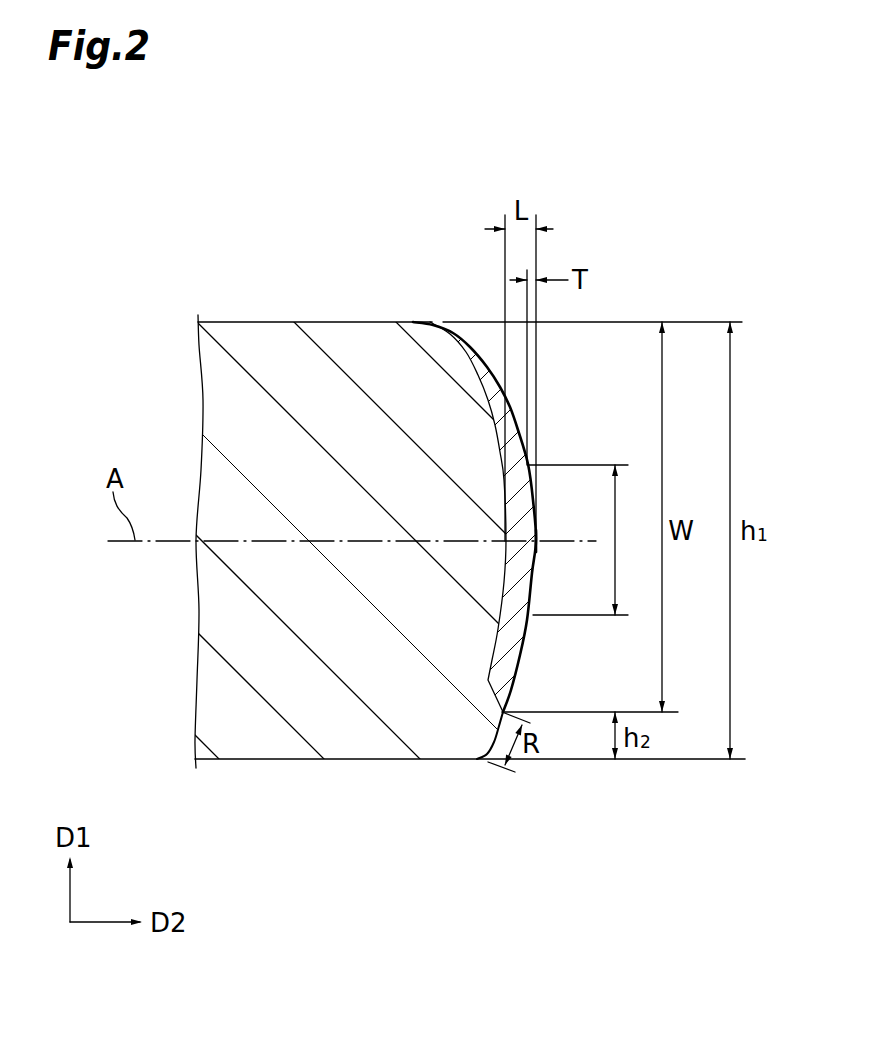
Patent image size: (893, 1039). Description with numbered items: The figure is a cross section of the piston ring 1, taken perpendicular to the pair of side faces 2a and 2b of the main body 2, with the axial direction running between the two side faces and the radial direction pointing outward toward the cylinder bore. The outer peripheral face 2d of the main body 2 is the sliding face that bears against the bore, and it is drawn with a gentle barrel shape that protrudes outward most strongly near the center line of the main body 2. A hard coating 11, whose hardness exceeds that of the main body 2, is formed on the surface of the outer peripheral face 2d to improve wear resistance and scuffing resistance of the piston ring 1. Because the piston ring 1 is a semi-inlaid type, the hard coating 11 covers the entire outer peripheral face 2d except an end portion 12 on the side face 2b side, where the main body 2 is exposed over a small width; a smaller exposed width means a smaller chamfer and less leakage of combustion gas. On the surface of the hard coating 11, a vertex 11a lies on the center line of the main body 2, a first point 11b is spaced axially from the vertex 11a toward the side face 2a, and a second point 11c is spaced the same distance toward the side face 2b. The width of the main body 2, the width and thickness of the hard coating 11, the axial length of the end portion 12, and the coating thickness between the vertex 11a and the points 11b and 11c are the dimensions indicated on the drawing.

The piston ring 1 is at (209, 274).
The main body 2 is at (360, 360).
The side face 2a is at (273, 322).
The side face 2b is at (282, 759).
The outer peripheral face 2d is at (552, 451).
The hard coating 11 is at (492, 377).
The vertex 11a is at (536, 541).
The first point 11b is at (528, 460).
The second point 11c is at (533, 615).
The end portion 12 is at (483, 757).